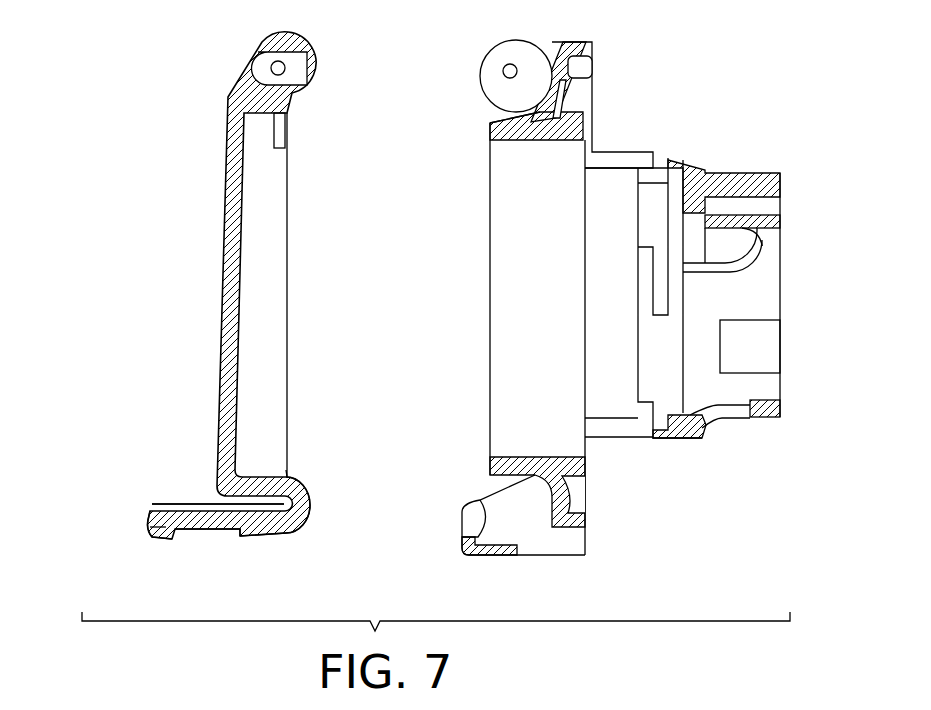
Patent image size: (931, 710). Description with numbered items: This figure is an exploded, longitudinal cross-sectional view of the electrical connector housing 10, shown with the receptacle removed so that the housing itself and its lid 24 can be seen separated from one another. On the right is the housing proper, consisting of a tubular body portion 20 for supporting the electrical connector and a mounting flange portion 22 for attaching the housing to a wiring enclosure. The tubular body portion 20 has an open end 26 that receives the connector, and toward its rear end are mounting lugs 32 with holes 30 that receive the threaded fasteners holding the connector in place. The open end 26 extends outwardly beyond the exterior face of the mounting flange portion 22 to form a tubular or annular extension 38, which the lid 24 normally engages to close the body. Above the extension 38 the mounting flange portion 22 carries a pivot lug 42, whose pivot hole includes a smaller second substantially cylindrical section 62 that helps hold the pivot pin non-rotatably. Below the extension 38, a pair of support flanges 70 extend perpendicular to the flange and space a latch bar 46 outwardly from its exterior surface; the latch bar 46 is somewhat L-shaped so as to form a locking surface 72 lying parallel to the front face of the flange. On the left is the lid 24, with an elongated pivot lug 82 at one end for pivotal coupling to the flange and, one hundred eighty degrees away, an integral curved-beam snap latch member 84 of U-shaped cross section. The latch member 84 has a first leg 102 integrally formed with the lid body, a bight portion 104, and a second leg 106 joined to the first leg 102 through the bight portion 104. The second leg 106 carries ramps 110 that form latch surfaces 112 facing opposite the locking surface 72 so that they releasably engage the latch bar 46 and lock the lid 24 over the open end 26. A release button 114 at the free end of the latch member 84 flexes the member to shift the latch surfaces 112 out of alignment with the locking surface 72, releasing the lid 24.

The electrical connector housing 10 is at (173, 136).
The tubular body portion 20 is at (726, 168).
The mounting flange portion 22 is at (578, 47).
The lid 24 is at (221, 276).
The open end 26 is at (497, 255).
The holes 30 is at (758, 205).
The mounting lugs 32 is at (752, 233).
The tubular or annular extension 38 is at (492, 121).
The pivot lug 42 is at (497, 42).
The latch bar 46 is at (490, 557).
The second substantially cylindrical section 62 is at (503, 70).
The support flanges 70 is at (585, 560).
The locking surface 72 is at (482, 520).
The elongated pivot lug 82 is at (300, 40).
The curved-beam snap latch member 84 is at (304, 490).
The first leg 102 is at (285, 470).
The bight portion 104 is at (228, 500).
The second leg 106 is at (205, 532).
The ramps 110 is at (265, 538).
The latch surfaces 112 is at (239, 539).
The release button 114 is at (150, 535).